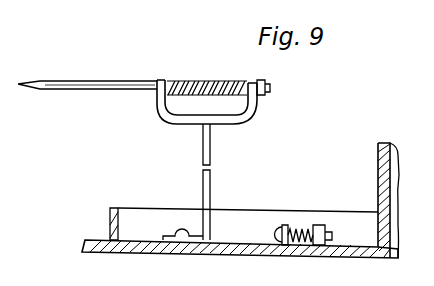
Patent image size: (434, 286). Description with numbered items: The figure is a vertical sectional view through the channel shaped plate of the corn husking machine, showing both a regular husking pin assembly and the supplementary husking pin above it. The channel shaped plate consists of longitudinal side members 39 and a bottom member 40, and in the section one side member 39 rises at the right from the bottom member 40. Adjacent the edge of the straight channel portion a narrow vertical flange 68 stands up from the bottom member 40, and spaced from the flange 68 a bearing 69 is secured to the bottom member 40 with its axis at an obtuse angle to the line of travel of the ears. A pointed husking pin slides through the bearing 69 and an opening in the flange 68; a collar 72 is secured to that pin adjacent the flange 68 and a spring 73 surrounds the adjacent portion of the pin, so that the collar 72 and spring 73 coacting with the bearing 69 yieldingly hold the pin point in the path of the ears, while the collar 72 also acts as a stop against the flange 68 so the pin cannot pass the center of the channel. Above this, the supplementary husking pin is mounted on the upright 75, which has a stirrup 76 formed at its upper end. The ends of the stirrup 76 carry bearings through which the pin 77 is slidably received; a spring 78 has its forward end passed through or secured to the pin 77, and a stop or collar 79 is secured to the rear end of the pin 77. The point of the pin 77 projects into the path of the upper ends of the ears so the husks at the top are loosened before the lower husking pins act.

The longitudinal side member 39 is at (390, 170).
The bottom member 40 is at (352, 257).
The vertical flange 68 is at (130, 224).
The bearing 69 is at (325, 228).
The collar 72 is at (284, 226).
The spring 73 is at (300, 227).
The upright 75 is at (210, 183).
The stirrup 76 is at (252, 110).
The pin 77 is at (70, 84).
The spring 78 is at (188, 82).
The stop or collar 79 is at (260, 82).